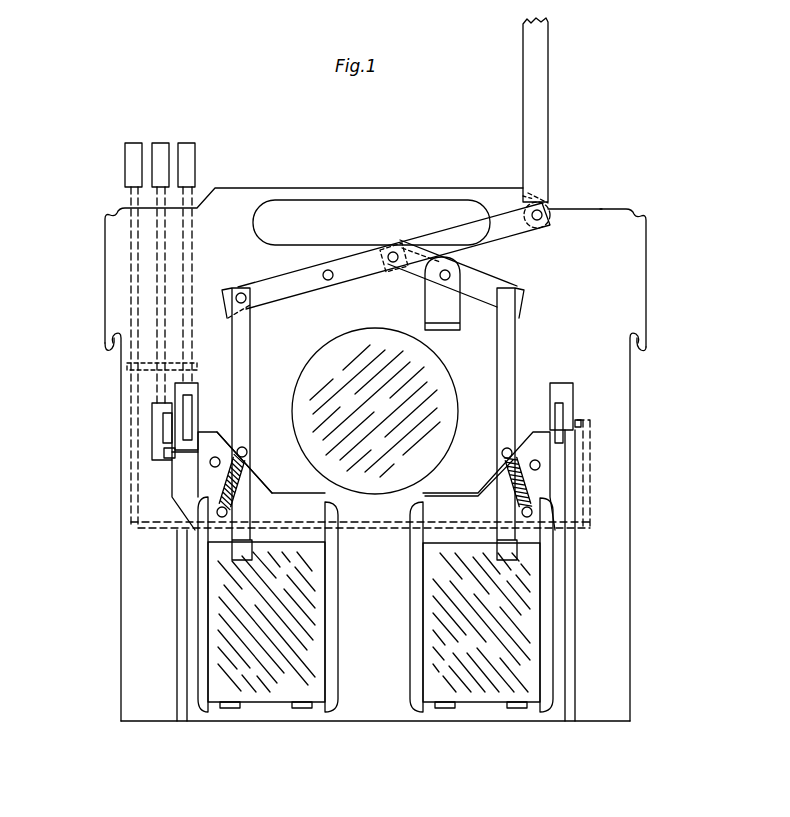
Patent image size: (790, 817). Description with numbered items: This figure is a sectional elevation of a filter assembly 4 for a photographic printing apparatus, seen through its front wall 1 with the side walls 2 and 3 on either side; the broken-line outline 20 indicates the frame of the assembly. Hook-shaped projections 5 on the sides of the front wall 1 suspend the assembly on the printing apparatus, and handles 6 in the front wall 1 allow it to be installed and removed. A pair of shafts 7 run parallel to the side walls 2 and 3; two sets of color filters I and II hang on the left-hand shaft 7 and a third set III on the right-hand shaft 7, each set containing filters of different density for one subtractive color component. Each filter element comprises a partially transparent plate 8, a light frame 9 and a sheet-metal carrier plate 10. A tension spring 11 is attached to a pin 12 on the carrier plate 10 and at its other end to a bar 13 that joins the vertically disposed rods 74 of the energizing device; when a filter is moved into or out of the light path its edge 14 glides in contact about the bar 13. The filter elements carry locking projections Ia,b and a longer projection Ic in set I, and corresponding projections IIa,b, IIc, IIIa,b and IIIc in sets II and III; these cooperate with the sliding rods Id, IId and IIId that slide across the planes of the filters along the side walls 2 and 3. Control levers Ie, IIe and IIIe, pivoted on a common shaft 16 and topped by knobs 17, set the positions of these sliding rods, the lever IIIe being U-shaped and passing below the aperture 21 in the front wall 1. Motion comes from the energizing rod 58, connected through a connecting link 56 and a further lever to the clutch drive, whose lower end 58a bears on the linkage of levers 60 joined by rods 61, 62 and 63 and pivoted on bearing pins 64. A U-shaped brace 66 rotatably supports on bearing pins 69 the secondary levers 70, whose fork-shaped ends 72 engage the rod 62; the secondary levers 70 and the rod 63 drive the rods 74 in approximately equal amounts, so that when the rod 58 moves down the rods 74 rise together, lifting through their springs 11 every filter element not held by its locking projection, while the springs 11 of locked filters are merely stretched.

The front wall 1 is at (640, 258).
The side wall 2 is at (178, 586).
The side wall 3 is at (576, 609).
The filter assembly 4 is at (610, 208).
The hook-shaped projections 5 is at (112, 346).
The handles 6 is at (362, 199).
The shafts 7 is at (209, 463).
The partially transparent plate 8 is at (480, 693).
The frame 9 is at (417, 641).
The carrier plate 10 is at (480, 501).
The tension spring 11 is at (238, 491).
The pin 12 is at (220, 507).
The bar 13 is at (247, 452).
The edge 14 is at (258, 478).
The common shaft 16 is at (150, 362).
The knobs 17 is at (187, 143).
The carriage outline 20 is at (154, 529).
The aperture 21 is at (447, 366).
The connecting link 56 is at (550, 223).
The rod 58 is at (540, 123).
The lower end 58a is at (550, 203).
The levers 60 is at (498, 235).
The rod 61 is at (523, 198).
The rod 62 is at (388, 253).
The rod 63 is at (241, 292).
The bearing pins 64 is at (328, 281).
The U-shaped brace 66 is at (432, 314).
The bearing pins 69 is at (447, 277).
The secondary levers 70 is at (478, 292).
The ends 72 is at (400, 245).
The vertically disposed rods 74 is at (245, 324).
The filter set I is at (317, 584).
The filter set II is at (340, 615).
The filter set III is at (435, 585).
The locking projections Ia,b is at (222, 442).
The locking projection Ic is at (200, 428).
The sliding rod Id is at (190, 409).
The control lever Ie is at (183, 262).
The locking projections IIa,b is at (177, 483).
The locking projection IIc is at (173, 454).
The sliding rod IId is at (168, 427).
The control lever IIe is at (160, 235).
The locking projections IIIa,b is at (549, 455).
The locking projection IIIc is at (541, 426).
The sliding bar IIId is at (559, 410).
The control lever IIIe is at (133, 233).